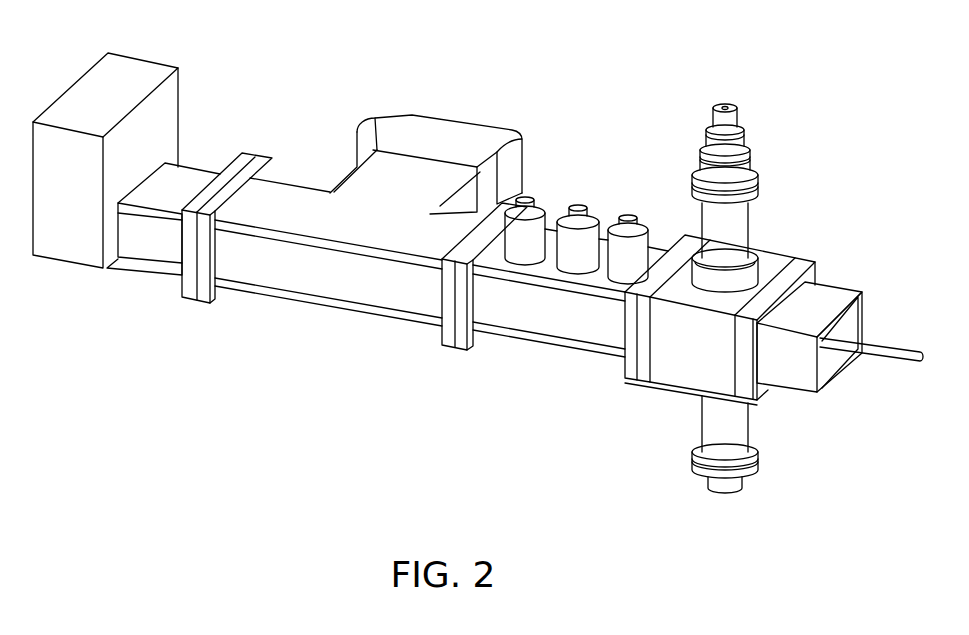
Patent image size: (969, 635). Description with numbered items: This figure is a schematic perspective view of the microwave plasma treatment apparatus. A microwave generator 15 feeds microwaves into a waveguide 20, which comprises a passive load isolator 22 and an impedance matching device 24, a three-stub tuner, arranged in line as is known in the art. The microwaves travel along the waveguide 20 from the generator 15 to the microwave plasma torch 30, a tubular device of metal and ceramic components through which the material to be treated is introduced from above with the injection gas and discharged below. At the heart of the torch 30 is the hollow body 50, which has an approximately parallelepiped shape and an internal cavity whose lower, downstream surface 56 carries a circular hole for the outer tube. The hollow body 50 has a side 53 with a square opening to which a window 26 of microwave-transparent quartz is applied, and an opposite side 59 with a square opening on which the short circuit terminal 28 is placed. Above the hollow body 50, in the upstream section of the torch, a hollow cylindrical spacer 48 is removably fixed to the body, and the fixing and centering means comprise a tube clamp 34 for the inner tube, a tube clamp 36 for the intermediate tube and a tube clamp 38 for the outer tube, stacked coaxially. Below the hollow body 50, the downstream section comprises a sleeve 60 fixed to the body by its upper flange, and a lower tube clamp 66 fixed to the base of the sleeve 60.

The microwave generator 15 is at (123, 77).
The waveguide 20 is at (369, 289).
The passive load isolator 22 is at (325, 273).
The impedance matching device 24 is at (547, 317).
The window 26 is at (621, 326).
The short circuit terminal 28 is at (825, 297).
The microwave plasma torch 30 is at (729, 157).
The tube clamp 34 is at (722, 122).
The tube clamp 36 is at (717, 147).
The tube clamp 38 is at (710, 168).
The hollow cylindrical spacer 48 is at (728, 228).
The hollow body 50 is at (722, 362).
The side 53 is at (645, 368).
The downstream surface 56 is at (740, 385).
The side 59 is at (802, 258).
The sleeve 60 is at (750, 424).
The lower tube clamp 66 is at (730, 483).